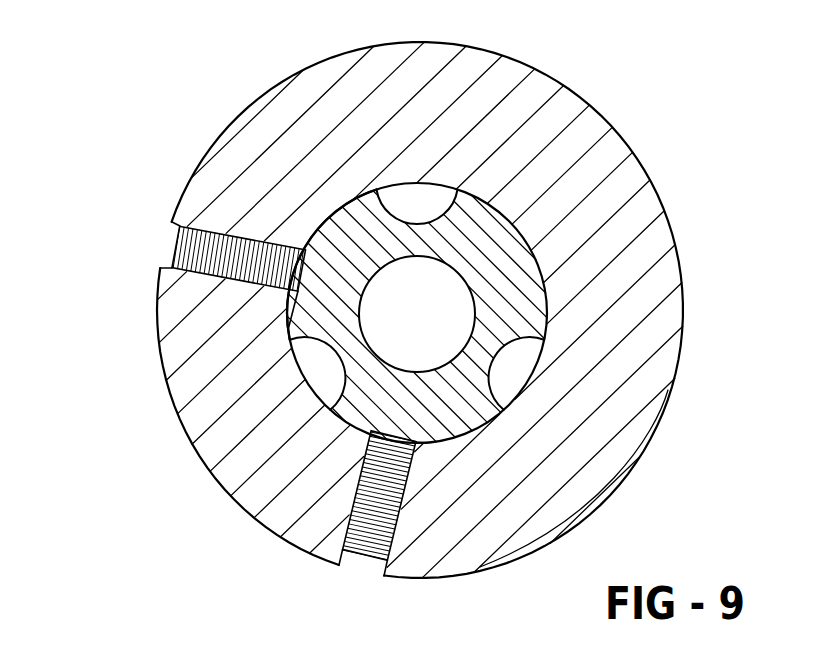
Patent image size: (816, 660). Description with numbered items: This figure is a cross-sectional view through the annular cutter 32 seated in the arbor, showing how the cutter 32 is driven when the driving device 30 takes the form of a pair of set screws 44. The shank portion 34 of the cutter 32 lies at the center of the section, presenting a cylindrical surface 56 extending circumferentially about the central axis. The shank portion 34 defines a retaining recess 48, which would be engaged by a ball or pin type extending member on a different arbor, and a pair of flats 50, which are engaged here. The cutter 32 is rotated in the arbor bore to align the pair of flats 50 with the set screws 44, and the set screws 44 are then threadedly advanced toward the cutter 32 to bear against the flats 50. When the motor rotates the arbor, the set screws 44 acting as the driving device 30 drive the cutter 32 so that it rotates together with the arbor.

The driving device 30 is at (361, 323).
The set screws 44 is at (176, 250).
The retaining recess 48 is at (433, 195).
The flats 50 is at (307, 243).
The cylindrical surface 56 is at (345, 203).
The cutter 32 is at (413, 256).
The shank portion 34 is at (528, 307).